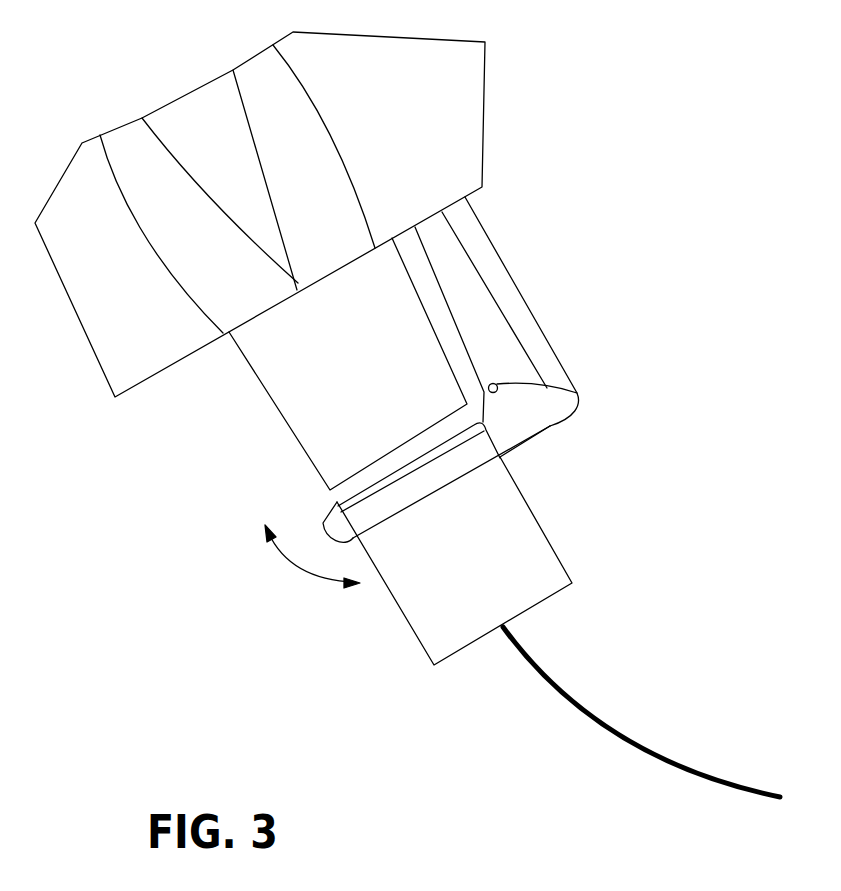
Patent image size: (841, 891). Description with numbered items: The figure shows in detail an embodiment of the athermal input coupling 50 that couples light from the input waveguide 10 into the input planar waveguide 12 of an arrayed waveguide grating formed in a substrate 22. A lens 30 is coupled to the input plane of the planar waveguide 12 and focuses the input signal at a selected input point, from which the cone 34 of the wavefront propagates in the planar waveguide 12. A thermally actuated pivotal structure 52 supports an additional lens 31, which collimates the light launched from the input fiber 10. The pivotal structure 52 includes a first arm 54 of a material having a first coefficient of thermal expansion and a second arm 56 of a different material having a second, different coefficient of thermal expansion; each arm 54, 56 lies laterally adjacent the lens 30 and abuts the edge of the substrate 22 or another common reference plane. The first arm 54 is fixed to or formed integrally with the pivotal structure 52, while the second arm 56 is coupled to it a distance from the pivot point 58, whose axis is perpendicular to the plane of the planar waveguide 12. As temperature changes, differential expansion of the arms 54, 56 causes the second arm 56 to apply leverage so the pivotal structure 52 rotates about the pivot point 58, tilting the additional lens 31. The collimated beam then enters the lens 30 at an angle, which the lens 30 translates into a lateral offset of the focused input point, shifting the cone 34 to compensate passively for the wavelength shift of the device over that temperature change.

The input waveguide 10 is at (592, 716).
The input planar waveguide 12 is at (338, 180).
The substrate 22 is at (379, 96).
The lens 30 is at (252, 360).
The additional lens 31 is at (407, 610).
The cone 34 is at (187, 120).
The athermal input coupling 50 is at (612, 377).
The pivotal structure 52 is at (517, 427).
The first arm 54 is at (435, 287).
The second arm 56 is at (517, 313).
The pivot point 58 is at (498, 391).